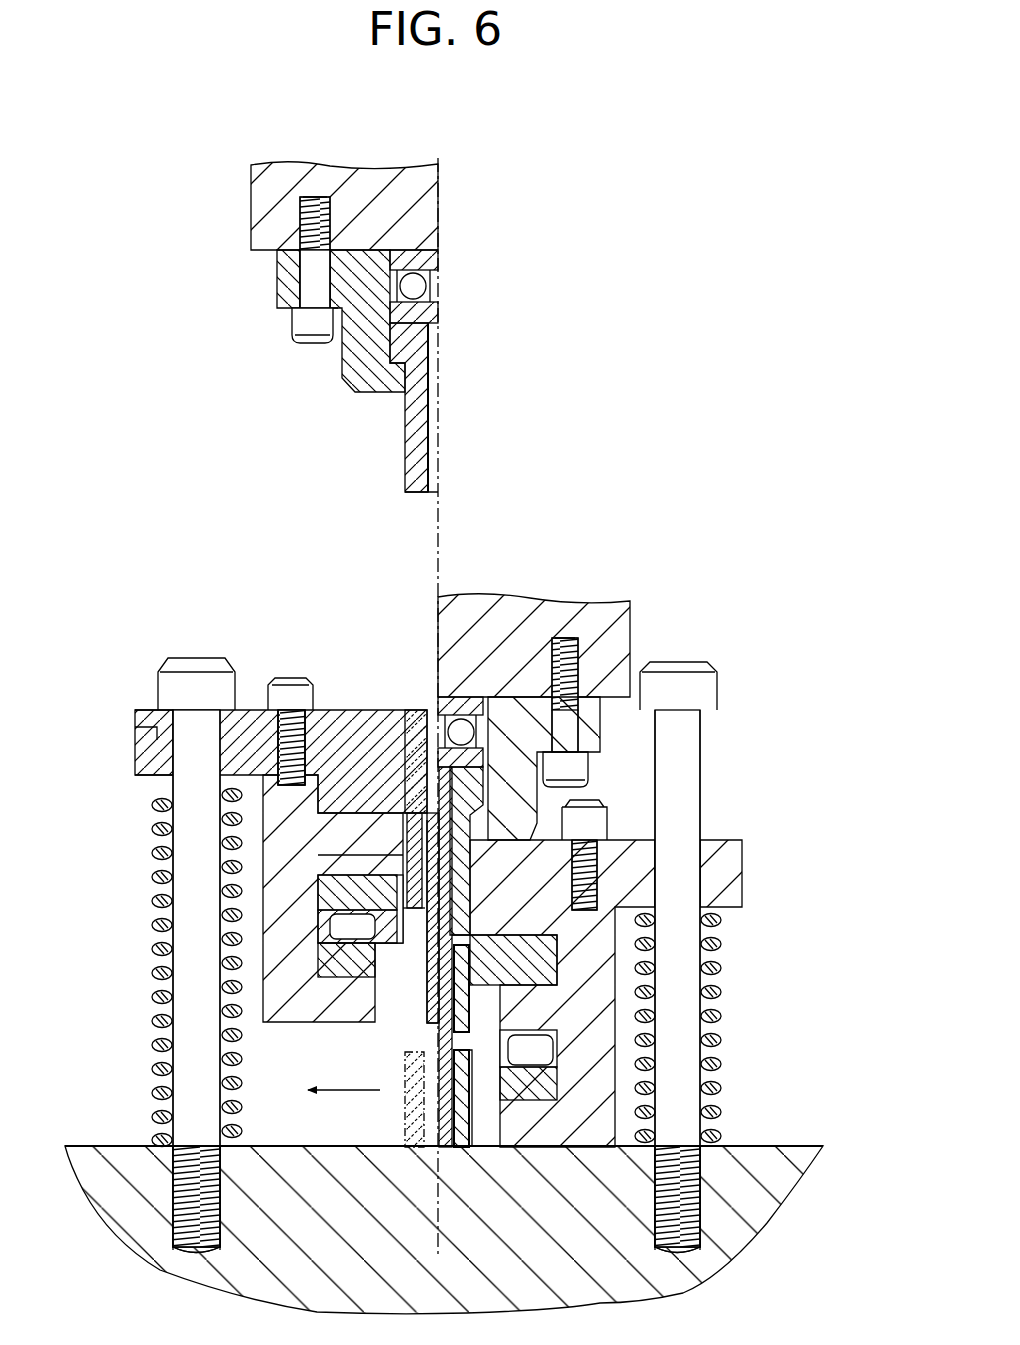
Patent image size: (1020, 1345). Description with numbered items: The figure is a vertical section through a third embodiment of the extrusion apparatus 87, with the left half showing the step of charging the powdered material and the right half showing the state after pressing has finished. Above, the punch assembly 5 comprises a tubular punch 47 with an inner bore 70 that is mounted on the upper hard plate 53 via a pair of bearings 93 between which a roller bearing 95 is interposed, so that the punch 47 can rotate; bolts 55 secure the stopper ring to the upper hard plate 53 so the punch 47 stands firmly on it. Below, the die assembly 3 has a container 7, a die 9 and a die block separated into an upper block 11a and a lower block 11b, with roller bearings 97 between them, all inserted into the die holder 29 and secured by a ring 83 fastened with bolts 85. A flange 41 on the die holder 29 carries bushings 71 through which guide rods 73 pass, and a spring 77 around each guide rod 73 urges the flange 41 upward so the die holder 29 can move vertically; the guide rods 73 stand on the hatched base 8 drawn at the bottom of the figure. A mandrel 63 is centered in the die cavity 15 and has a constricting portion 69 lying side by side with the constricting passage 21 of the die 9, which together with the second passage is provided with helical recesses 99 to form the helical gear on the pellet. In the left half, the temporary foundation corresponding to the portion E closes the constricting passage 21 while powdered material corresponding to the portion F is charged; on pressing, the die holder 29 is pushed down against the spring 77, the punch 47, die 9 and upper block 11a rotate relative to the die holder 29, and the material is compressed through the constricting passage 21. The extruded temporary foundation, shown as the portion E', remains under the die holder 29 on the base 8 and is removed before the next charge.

The die assembly 3 is at (576, 542).
The punch assembly 5 is at (540, 385).
The container 7 is at (350, 745).
The base / bolster 8 is at (130, 1225).
The die 9 is at (325, 880).
The upper block 11a is at (337, 898).
The lower block 11b is at (329, 977).
The die cavity 15 is at (378, 740).
The constricting passage 21 is at (395, 810).
The die holder 29 is at (142, 710).
The flange 41 is at (137, 750).
The punch 47 is at (412, 435).
The upper hard plate 53 is at (262, 205).
The bolts 55 is at (310, 328).
The mandrel 63 is at (432, 706).
The constricting portion 69 is at (427, 980).
The inner bore 70 is at (430, 492).
The bushing 71 is at (150, 790).
The guide rods 73 is at (185, 1022).
The spring 77 is at (157, 1075).
The ring 83 is at (335, 730).
The bolts 85 is at (278, 693).
The extrusion apparatus 87 is at (427, 353).
The bearings 93 is at (418, 255).
The roller bearing 95 is at (412, 282).
The roller bearings 97 is at (337, 927).
The helical recesses 99 is at (347, 855).
The portion E is at (458, 1056).
The portion E' is at (390, 1099).
The portion F is at (415, 735).